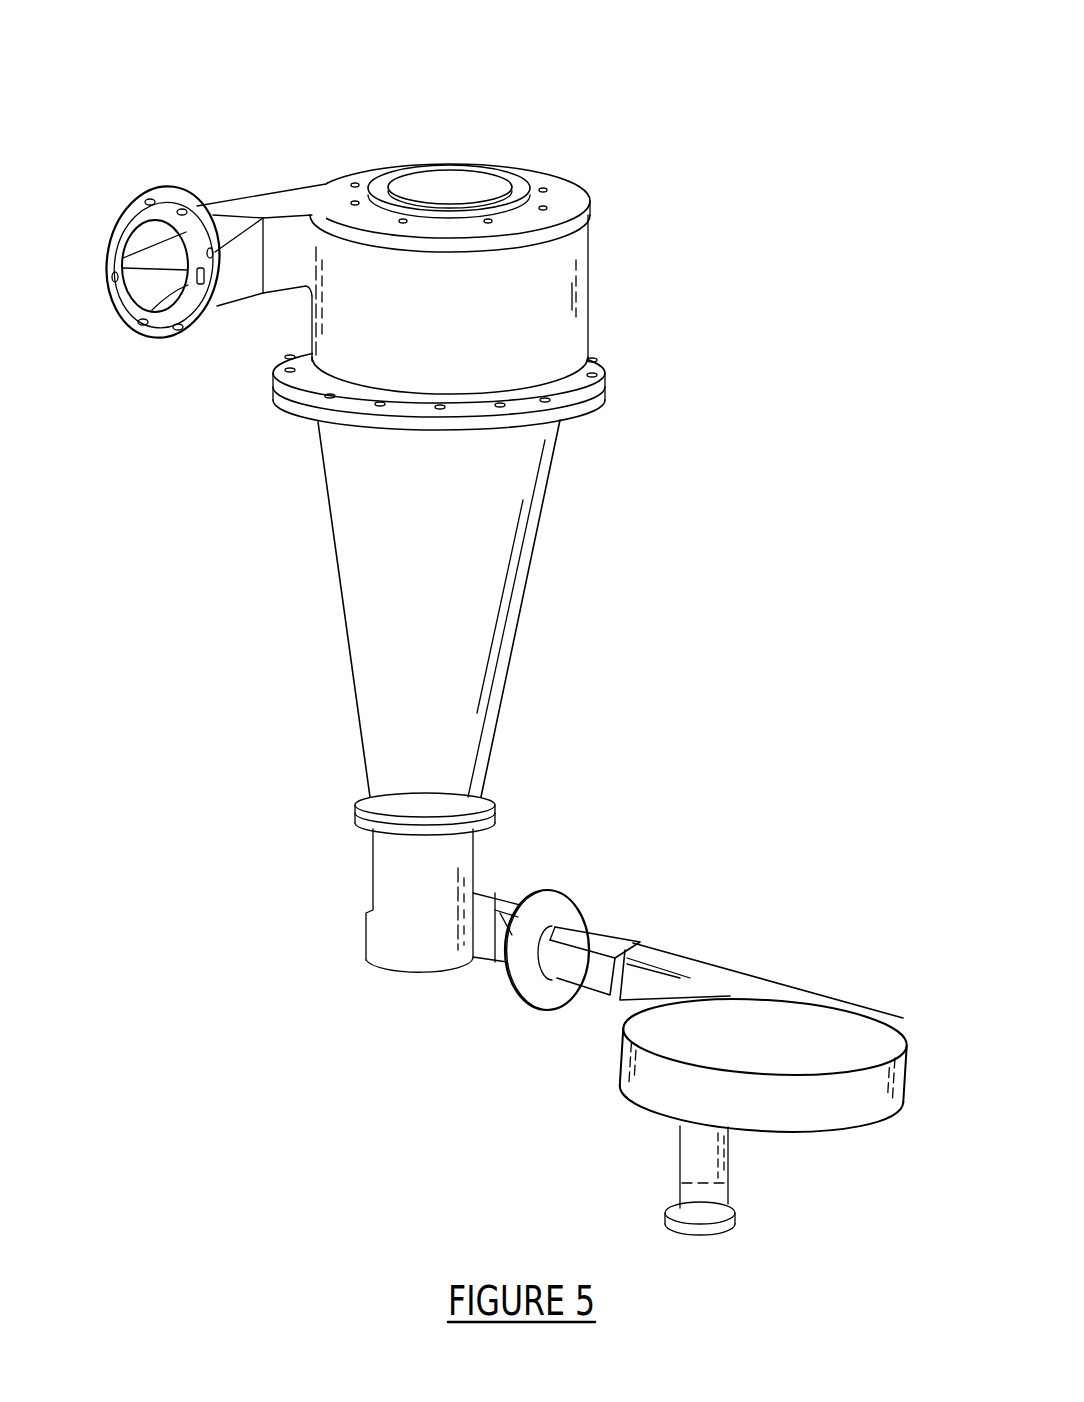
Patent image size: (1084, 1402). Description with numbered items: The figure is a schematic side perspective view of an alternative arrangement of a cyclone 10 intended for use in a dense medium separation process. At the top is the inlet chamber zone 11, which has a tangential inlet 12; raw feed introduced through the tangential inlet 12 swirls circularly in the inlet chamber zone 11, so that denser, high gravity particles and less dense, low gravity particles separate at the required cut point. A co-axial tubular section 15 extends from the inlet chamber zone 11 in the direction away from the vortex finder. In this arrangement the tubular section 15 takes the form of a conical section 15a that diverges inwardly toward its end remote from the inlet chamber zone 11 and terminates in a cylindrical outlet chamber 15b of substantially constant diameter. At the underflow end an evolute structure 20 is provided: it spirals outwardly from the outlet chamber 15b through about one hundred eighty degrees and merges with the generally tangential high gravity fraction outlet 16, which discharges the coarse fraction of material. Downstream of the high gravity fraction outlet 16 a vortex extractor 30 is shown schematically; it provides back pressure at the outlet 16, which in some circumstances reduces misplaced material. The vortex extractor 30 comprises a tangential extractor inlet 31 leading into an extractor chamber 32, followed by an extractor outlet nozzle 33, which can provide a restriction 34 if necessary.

The cyclone 10 is at (693, 148).
The inlet chamber zone 11 is at (560, 340).
The tangential inlet 12 is at (281, 200).
The tubular section 15 is at (645, 582).
The conical section 15a is at (493, 753).
The cylindrical outlet chamber 15b is at (383, 853).
The high gravity fraction outlet 16 is at (496, 963).
The evolute structure 20 is at (387, 920).
The vortex extractor 30 is at (709, 923).
The tangential extractor inlet 31 is at (739, 985).
The extractor chamber 32 is at (828, 1032).
The extractor outlet nozzle 33 is at (705, 1235).
The restriction 34 is at (727, 1208).